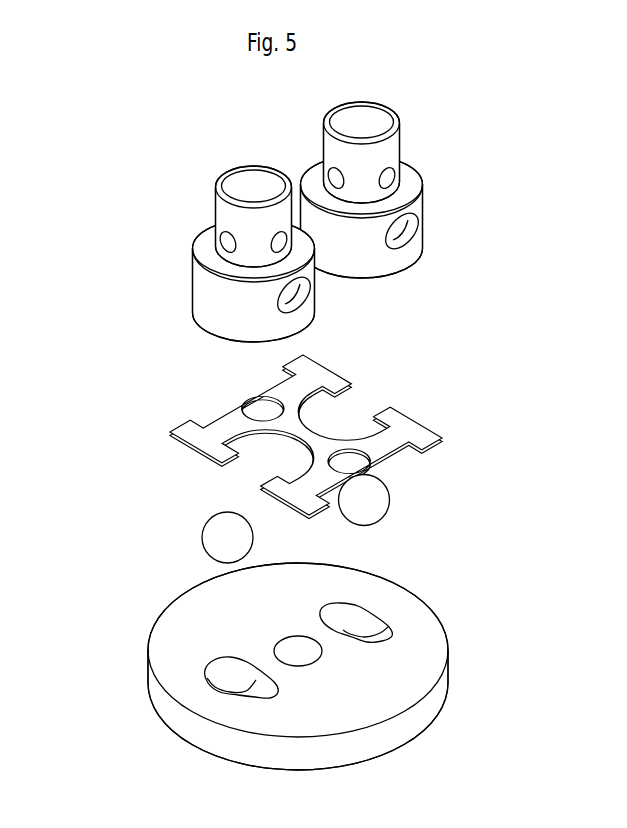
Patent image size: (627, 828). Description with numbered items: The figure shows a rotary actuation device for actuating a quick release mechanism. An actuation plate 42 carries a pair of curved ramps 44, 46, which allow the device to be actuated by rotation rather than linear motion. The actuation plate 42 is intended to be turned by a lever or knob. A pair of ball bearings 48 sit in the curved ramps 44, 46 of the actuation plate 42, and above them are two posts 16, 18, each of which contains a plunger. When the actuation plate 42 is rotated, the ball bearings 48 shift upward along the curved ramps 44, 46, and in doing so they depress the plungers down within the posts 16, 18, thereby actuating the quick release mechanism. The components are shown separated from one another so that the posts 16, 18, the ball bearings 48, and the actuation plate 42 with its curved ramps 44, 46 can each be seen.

The post 16 is at (194, 244).
The post 18 is at (421, 167).
The actuation plate 42 is at (451, 680).
The curved ramp 44 is at (219, 678).
The curved ramp 46 is at (389, 632).
The ball bearing 48 is at (203, 528).